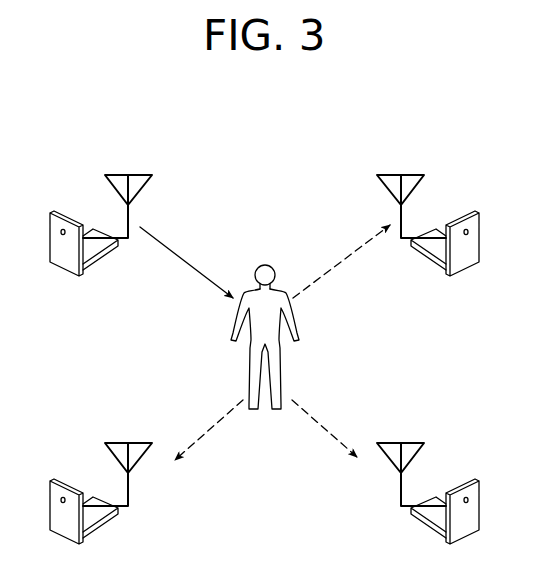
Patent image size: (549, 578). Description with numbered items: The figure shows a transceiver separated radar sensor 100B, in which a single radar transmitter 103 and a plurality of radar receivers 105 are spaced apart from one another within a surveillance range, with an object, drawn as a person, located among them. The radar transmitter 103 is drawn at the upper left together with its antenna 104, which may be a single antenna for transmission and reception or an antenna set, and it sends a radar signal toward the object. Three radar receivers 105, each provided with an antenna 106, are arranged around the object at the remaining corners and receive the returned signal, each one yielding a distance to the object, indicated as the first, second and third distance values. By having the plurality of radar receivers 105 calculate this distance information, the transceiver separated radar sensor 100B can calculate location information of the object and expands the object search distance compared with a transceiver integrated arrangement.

The transceiver separated radar sensor 100B is at (357, 98).
The radar transmitter 103 is at (65, 212).
The antenna 104 is at (138, 174).
The radar receiver 105 is at (464, 212).
The antenna 106 is at (390, 174).